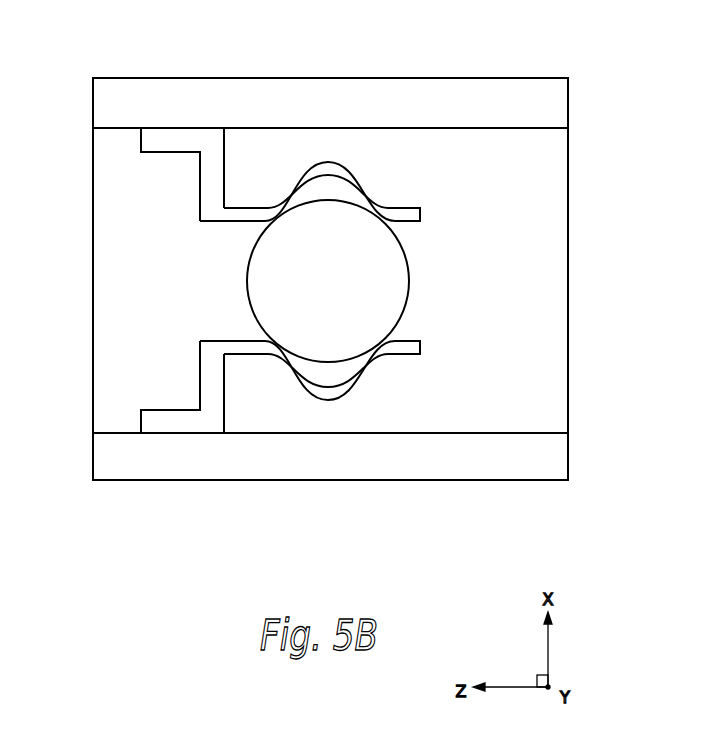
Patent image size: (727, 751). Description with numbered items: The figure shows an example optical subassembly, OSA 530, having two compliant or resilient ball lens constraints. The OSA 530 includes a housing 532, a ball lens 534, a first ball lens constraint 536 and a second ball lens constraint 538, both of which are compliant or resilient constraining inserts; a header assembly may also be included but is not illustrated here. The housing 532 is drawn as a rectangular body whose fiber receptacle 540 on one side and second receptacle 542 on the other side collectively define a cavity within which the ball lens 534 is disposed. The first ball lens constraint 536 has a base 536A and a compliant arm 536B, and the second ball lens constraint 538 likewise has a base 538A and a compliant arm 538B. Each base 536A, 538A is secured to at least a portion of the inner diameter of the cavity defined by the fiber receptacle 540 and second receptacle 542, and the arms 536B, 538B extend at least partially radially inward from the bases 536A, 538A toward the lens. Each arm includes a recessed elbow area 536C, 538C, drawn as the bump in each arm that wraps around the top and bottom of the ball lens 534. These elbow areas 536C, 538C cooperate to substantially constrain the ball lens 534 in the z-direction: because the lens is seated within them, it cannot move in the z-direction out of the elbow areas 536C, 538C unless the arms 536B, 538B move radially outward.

The OSA 530 is at (371, 289).
The housing 532 is at (312, 78).
The ball lens 534 is at (352, 282).
The first ball lens constraint 536 is at (267, 116).
The base 536A is at (163, 152).
The compliant arm 536B is at (292, 193).
The recessed elbow area 536C is at (330, 152).
The second ball lens constraint 538 is at (250, 453).
The base 538A is at (165, 411).
The compliant arm 538B is at (293, 378).
The recessed elbow area 538C is at (334, 410).
The fiber receptacle 540 is at (149, 273).
The second receptacle 542 is at (536, 288).